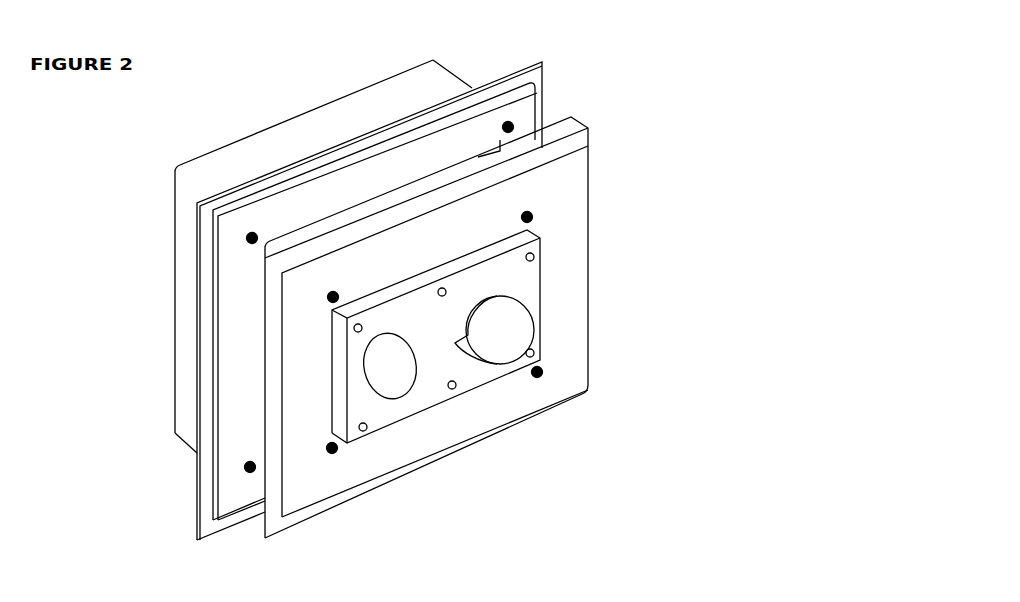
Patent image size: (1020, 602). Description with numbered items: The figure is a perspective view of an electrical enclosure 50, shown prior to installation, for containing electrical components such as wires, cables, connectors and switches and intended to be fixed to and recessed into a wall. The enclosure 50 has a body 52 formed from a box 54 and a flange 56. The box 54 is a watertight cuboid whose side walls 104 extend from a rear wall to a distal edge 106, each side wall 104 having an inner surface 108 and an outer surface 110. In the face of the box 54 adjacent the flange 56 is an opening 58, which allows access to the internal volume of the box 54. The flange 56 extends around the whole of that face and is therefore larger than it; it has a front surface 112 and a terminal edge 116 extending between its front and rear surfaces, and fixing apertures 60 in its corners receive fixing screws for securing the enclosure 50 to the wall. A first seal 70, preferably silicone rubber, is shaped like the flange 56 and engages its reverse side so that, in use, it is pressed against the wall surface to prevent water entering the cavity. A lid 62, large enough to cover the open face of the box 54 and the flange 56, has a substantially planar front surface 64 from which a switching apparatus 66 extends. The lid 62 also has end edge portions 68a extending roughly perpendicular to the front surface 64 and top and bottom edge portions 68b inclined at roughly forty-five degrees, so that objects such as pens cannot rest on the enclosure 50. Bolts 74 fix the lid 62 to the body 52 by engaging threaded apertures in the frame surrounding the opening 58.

The electrical enclosure 50 is at (552, 451).
The body 52 is at (442, 90).
The box 54 is at (207, 173).
The flange 56 is at (240, 275).
The opening 58 is at (197, 203).
The fixing apertures 60 is at (246, 236).
The lid 62 is at (303, 490).
The front surface 64 is at (563, 287).
The switching apparatus 66 is at (408, 408).
The end edge portions 68a is at (273, 384).
The top and bottom edge portions 68b is at (477, 157).
The first seal 70 is at (205, 510).
The bolts 74 is at (540, 375).
The side walls 104 is at (343, 122).
The distal edge 106 is at (442, 150).
The inner surface 108 is at (520, 165).
The outer surface 110 is at (293, 143).
The front surface 112 is at (413, 183).
The terminal edge 116 is at (213, 433).